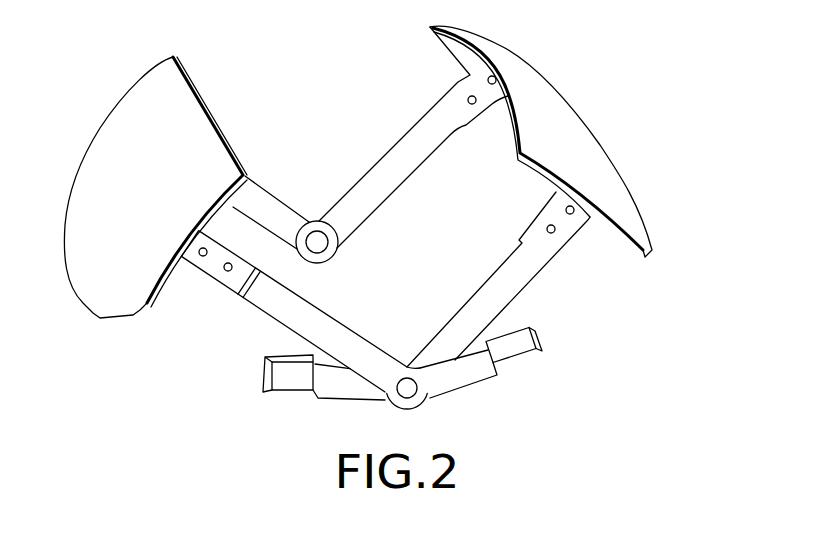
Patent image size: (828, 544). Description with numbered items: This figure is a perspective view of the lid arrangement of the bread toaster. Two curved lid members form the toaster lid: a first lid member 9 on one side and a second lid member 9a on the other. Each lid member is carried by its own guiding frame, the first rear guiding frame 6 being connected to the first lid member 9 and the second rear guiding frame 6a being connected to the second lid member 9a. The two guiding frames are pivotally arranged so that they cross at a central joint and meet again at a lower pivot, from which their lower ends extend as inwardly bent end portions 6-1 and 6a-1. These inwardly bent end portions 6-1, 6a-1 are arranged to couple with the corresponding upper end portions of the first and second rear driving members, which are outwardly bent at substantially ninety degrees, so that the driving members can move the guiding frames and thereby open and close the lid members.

The first lid member 9 is at (157, 138).
The second lid member 9a is at (547, 120).
The first rear guiding frame 6 is at (290, 307).
The second rear guiding frame 6a is at (495, 302).
The inwardly bent end portion 6-1 is at (290, 388).
The inwardly bent end portion 6a-1 is at (520, 357).